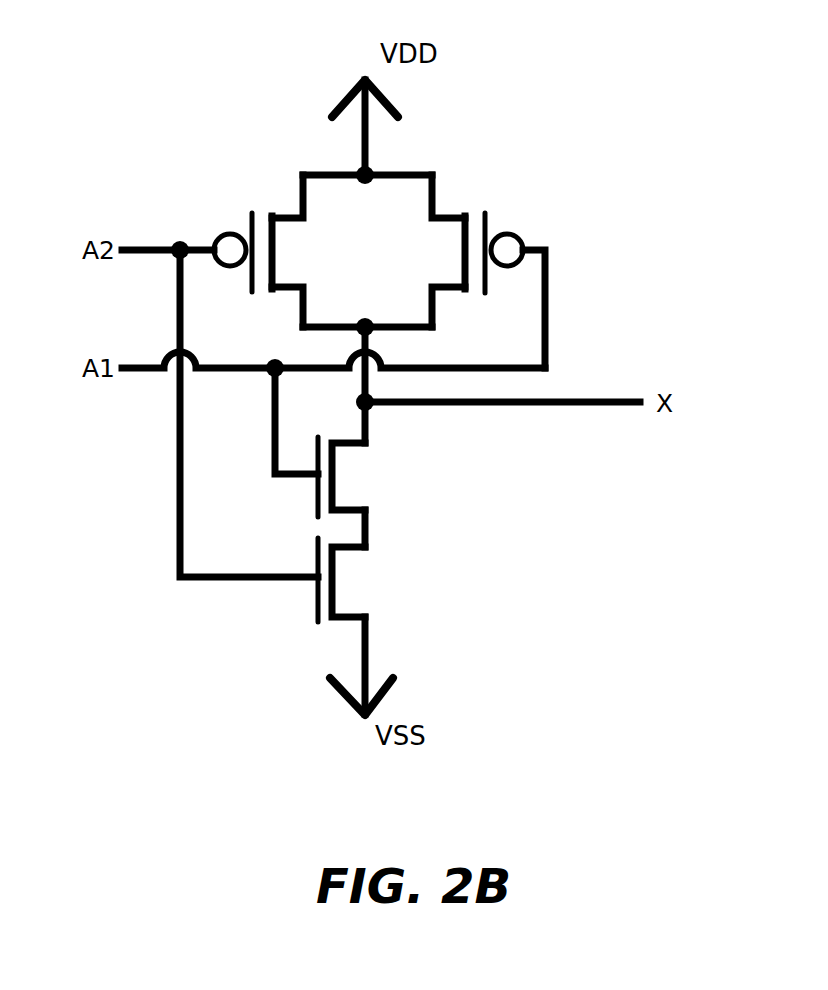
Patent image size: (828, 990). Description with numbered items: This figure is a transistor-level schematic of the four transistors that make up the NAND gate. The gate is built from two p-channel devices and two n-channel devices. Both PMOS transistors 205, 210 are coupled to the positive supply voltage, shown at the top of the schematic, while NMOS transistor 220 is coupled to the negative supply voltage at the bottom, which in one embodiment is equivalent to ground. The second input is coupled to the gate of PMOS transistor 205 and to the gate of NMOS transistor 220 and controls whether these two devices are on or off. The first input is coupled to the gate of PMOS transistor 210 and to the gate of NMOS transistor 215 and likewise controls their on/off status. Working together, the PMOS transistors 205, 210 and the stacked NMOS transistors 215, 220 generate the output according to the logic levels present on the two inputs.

The PMOS transistor 205 is at (255, 200).
The PMOS transistor 210 is at (478, 200).
The NMOS transistor 215 is at (343, 477).
The NMOS transistor 220 is at (343, 580).